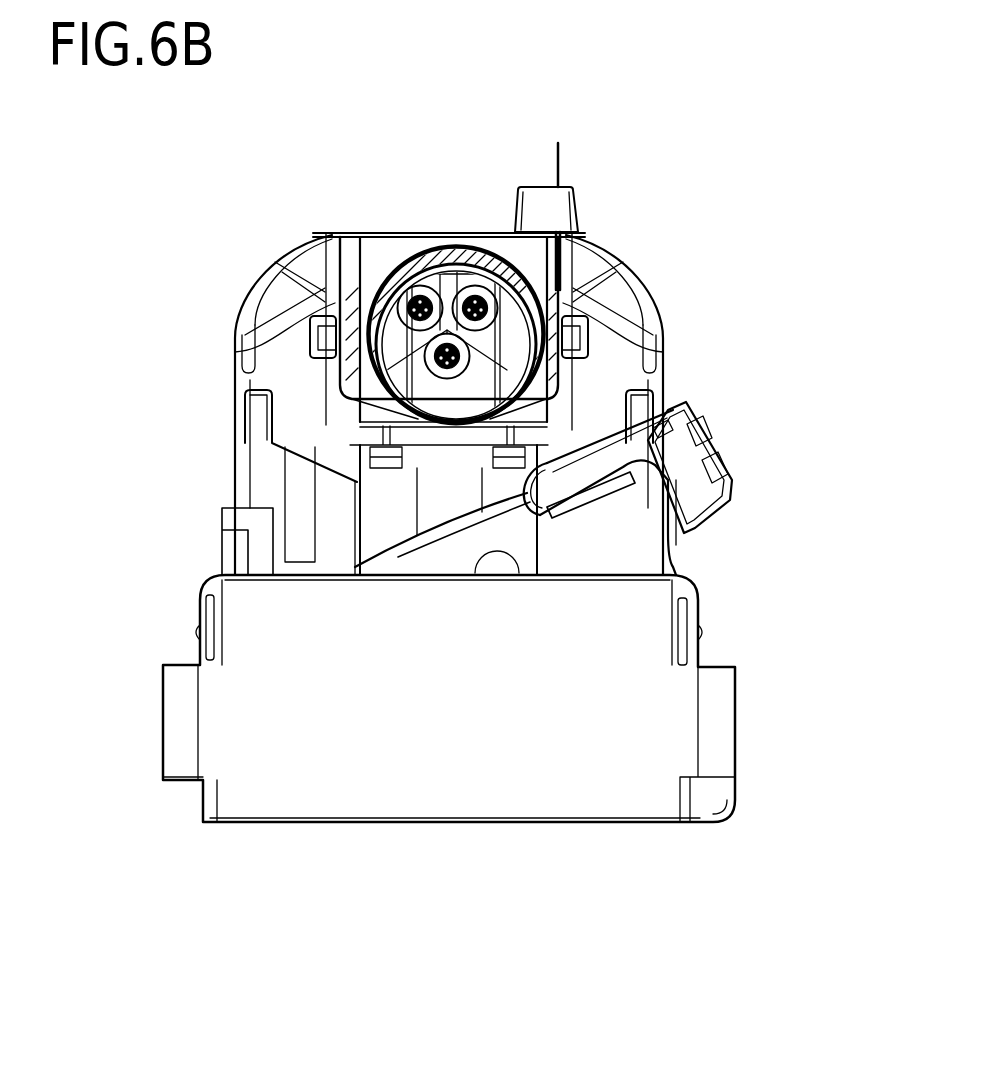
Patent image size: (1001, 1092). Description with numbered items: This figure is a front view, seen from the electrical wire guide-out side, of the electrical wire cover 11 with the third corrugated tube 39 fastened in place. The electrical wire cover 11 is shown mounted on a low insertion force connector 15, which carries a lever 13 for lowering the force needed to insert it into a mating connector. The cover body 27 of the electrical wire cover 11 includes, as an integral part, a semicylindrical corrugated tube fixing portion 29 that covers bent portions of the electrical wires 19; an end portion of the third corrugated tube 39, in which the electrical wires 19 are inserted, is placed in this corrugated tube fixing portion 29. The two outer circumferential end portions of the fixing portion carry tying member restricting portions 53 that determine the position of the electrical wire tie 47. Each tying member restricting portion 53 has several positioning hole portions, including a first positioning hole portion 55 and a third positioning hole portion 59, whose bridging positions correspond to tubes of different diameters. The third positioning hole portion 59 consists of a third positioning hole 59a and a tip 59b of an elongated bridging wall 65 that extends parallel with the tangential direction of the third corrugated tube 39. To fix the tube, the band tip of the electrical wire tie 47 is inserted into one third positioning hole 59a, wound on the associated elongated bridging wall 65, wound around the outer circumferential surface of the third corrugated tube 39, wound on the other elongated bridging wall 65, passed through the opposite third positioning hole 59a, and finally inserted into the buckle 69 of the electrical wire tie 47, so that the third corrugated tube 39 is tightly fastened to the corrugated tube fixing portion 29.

The electrical wire cover 11 is at (685, 203).
The lever 13 is at (724, 442).
The low insertion force connector 15 is at (234, 848).
The electrical wires 19 is at (472, 288).
The cover body 27 is at (243, 275).
The corrugated tube fixing portion 29 is at (545, 245).
The third corrugated tube 39 is at (405, 252).
The electrical wire tie 47 is at (588, 158).
The tying member restricting portion 53 is at (592, 296).
The first positioning hole portion 55 is at (343, 276).
The third positioning hole portion 59 is at (140, 340).
The third positioning hole 59a is at (262, 345).
The tip of the elongated bridging wall 59b is at (326, 403).
The elongated bridging wall 65 is at (320, 368).
The buckle 69 is at (533, 184).